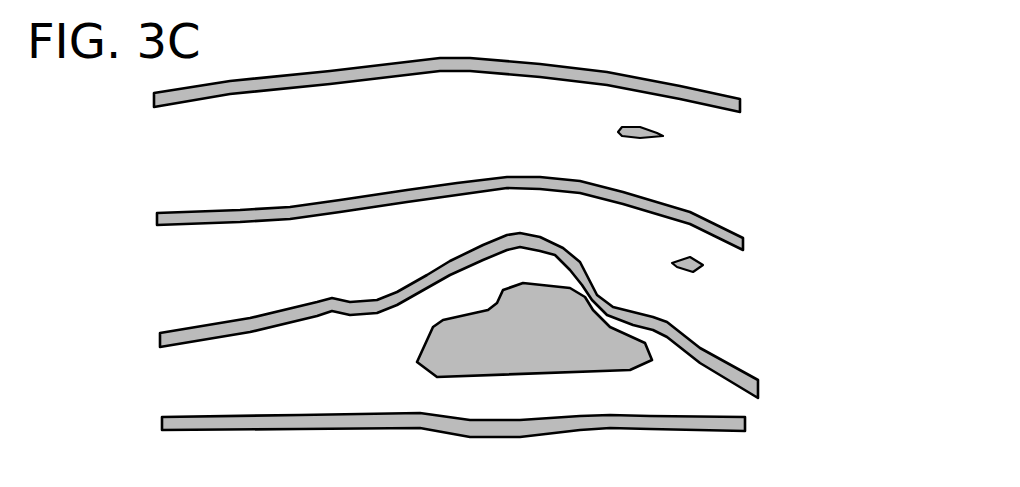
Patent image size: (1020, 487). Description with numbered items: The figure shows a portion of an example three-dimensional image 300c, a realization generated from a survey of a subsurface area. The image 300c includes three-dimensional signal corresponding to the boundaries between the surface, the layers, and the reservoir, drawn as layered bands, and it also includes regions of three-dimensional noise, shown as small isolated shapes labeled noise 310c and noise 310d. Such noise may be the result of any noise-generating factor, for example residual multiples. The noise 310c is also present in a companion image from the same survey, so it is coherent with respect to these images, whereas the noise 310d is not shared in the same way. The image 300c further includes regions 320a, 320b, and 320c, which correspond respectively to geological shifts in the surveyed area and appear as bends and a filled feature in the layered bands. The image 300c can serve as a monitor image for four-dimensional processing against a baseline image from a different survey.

The 3D image 300c is at (573, 50).
The noise 310c is at (703, 267).
The noise 310d is at (663, 135).
The region 320a is at (377, 285).
The region 320b is at (486, 301).
The region 320c is at (624, 267).